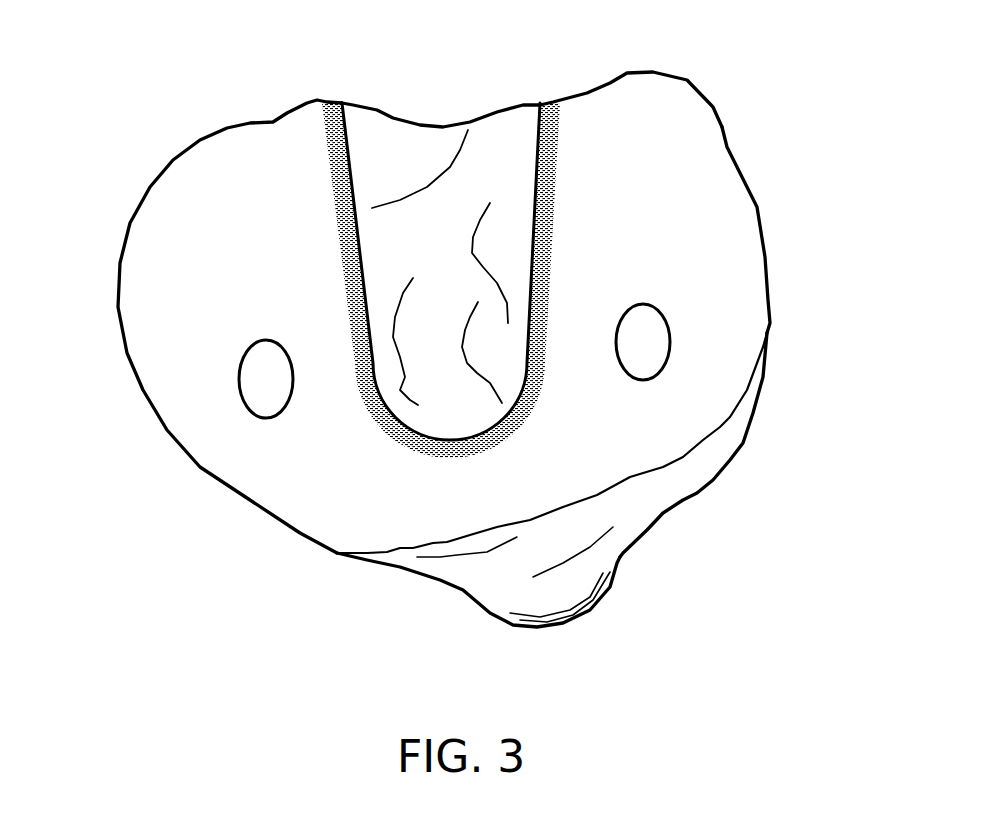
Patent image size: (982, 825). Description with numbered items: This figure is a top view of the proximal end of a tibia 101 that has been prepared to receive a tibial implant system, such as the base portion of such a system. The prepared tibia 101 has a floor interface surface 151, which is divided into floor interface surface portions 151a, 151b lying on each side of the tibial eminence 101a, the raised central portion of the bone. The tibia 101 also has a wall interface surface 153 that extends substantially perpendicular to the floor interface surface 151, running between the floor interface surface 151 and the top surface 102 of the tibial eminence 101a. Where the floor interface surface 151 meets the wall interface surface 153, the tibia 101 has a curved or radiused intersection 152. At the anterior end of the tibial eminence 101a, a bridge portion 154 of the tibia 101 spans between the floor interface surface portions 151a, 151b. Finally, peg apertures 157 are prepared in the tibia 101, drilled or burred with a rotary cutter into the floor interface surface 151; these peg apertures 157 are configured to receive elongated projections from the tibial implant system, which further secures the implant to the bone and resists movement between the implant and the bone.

The tibia 101 is at (552, 445).
The tibial eminence 101a is at (443, 86).
The top surface of the tibial eminence 102 is at (440, 234).
The floor interface surface 151 is at (666, 102).
The floor interface surface portion 151a is at (790, 230).
The floor interface surface portion 151b is at (192, 326).
The curved or radiused intersection 152 is at (290, 271).
The wall interface surface 153 is at (336, 280).
The bridge portion 154 is at (430, 565).
The peg apertures 157 is at (366, 365).